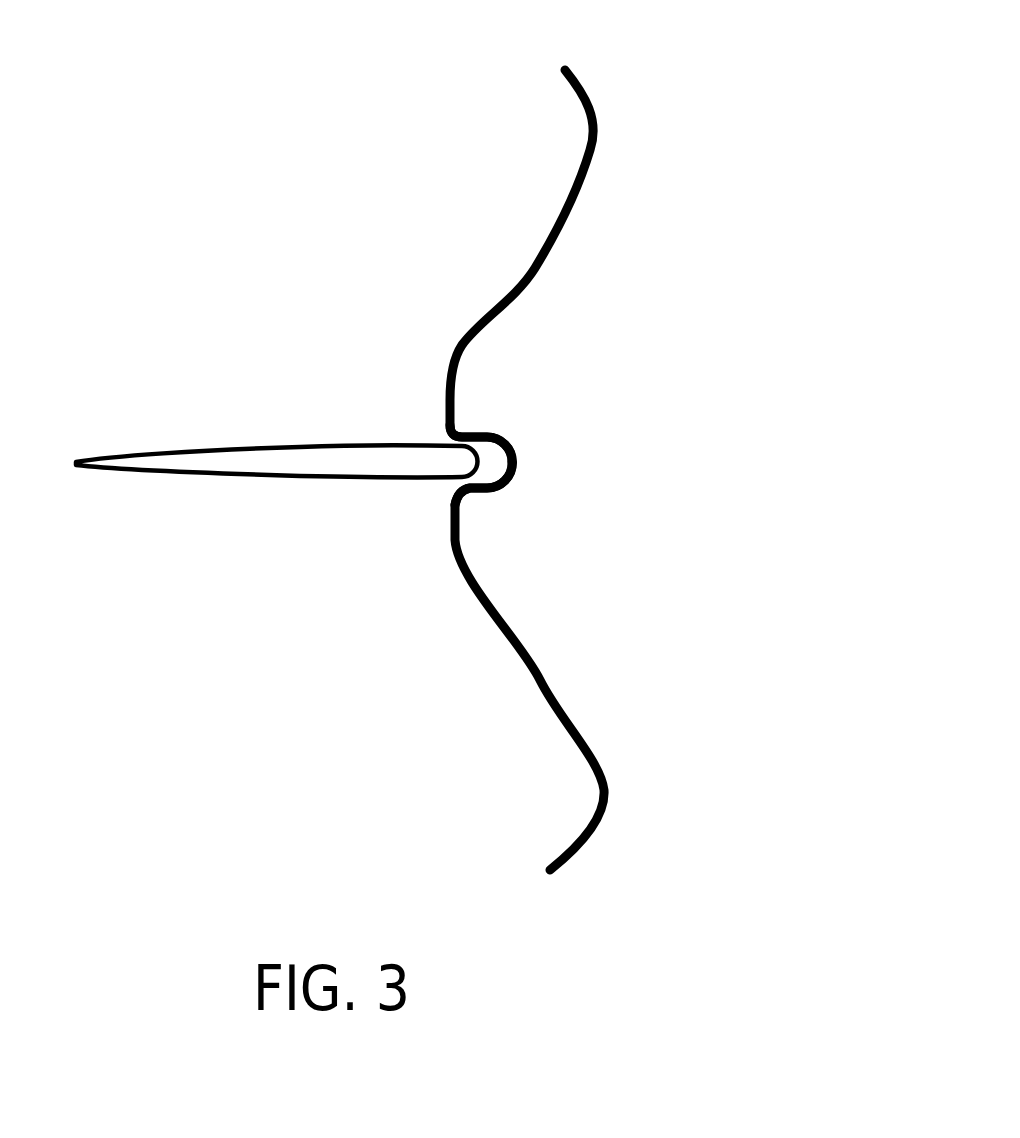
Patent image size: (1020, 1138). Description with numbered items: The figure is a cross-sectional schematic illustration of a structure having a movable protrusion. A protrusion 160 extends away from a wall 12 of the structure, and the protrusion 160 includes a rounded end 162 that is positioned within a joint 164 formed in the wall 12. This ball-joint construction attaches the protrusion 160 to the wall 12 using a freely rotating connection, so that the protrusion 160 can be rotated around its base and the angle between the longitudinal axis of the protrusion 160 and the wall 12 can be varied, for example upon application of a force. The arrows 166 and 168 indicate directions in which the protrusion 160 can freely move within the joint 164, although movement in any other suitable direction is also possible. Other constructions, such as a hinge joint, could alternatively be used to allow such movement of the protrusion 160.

The wall 12 is at (604, 782).
The protrusion 160 is at (237, 462).
The rounded end 162 is at (478, 428).
The joint 164 is at (505, 483).
The arrow 166 is at (207, 268).
The arrow 168 is at (218, 518).